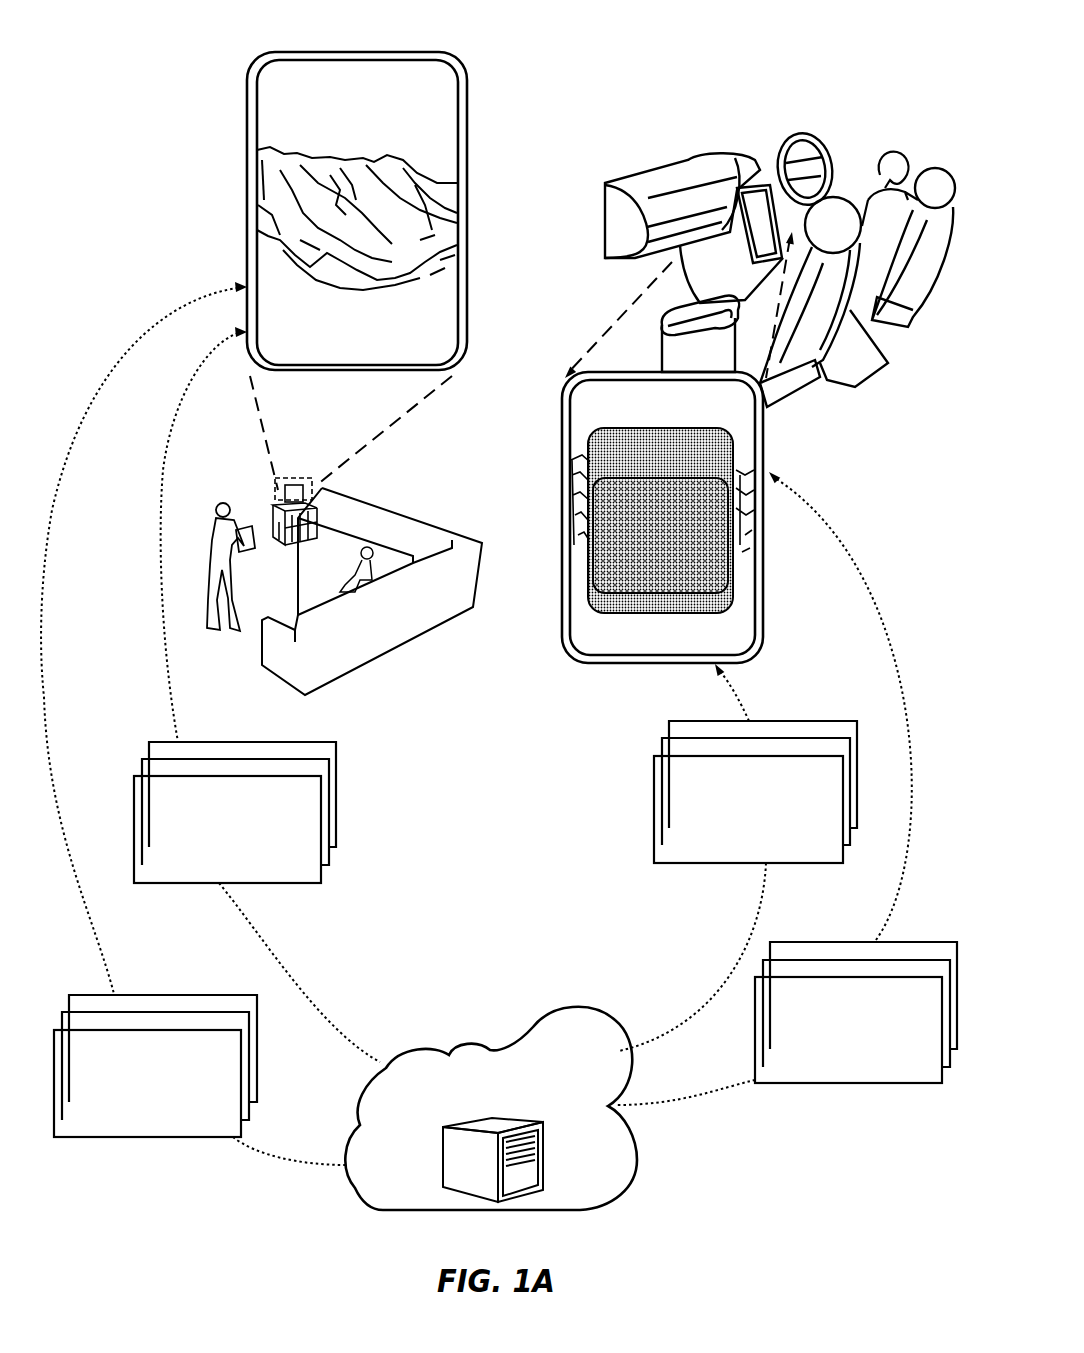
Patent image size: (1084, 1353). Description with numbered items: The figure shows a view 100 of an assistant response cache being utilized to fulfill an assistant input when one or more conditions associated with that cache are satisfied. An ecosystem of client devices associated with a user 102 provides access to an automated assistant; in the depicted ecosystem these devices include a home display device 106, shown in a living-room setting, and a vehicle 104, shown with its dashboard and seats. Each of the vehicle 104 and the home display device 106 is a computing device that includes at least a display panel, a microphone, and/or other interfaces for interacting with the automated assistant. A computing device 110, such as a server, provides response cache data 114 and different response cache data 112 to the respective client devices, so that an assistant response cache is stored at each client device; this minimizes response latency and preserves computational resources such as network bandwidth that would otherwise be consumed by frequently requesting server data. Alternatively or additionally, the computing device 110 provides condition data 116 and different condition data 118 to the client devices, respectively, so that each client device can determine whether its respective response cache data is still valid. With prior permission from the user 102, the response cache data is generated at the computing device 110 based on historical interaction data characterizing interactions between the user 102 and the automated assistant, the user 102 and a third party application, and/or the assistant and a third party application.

The view 100 is at (160, 70).
The user 102 is at (190, 555).
The vehicle 104 is at (676, 133).
The home display device 106 is at (258, 477).
The computing device 110 is at (490, 1171).
The response cache data 112 is at (762, 842).
The response cache data 114 is at (242, 861).
The condition data 116 is at (162, 1104).
The condition data 118 is at (864, 1051).